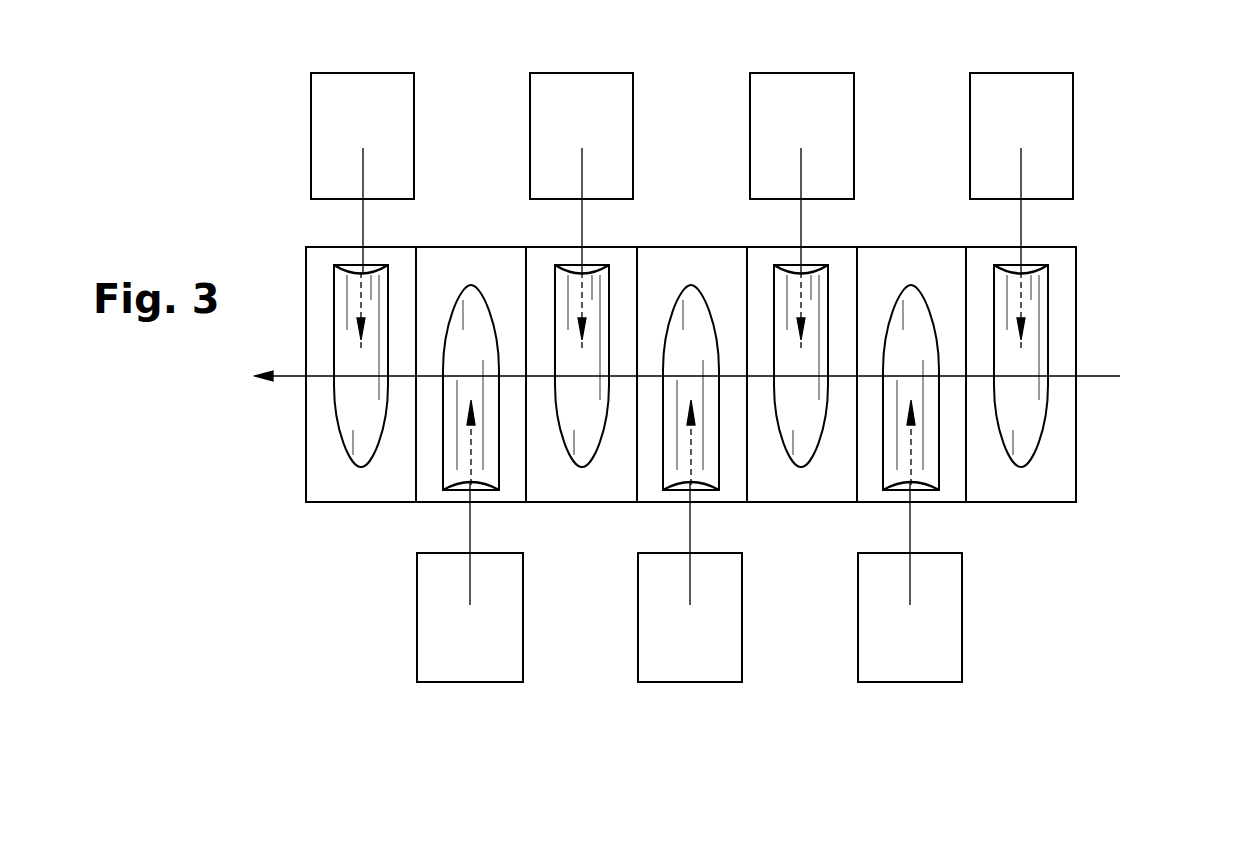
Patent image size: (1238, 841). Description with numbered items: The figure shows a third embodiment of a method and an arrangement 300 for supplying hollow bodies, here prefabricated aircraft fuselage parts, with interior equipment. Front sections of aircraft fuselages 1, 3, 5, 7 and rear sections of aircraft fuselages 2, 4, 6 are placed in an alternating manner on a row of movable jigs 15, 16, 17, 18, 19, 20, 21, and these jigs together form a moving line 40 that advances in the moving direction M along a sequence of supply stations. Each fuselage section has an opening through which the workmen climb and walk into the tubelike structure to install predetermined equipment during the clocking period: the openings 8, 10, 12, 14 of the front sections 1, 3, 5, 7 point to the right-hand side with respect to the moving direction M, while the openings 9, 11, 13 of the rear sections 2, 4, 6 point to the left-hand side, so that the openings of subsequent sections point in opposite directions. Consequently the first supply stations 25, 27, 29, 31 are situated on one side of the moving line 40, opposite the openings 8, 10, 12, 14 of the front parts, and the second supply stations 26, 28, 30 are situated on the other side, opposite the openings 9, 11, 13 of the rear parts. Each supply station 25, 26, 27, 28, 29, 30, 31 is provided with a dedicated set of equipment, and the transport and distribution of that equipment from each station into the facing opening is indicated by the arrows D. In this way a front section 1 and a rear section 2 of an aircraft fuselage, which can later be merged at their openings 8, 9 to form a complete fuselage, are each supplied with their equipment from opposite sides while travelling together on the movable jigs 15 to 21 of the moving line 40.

The arrangement 300 is at (228, 85).
The moving line 40 is at (1118, 464).
The front section of aircraft fuselage 1 is at (353, 420).
The rear section of aircraft fuselage 2 is at (463, 352).
The front section of aircraft fuselage 3 is at (574, 420).
The rear section of aircraft fuselage 4 is at (683, 352).
The front section of aircraft fuselage 5 is at (793, 420).
The rear section of aircraft fuselage 6 is at (903, 352).
The front section of aircraft fuselage 7 is at (1013, 420).
The opening 8 is at (353, 268).
The opening 9 is at (478, 492).
The opening 10 is at (574, 268).
The opening 11 is at (698, 492).
The opening 12 is at (793, 268).
The opening 13 is at (918, 492).
The opening 14 is at (1013, 268).
The movable jig 15 is at (360, 483).
The movable jig 16 is at (450, 267).
The movable jig 17 is at (581, 483).
The movable jig 18 is at (670, 267).
The movable jig 19 is at (801, 483).
The movable jig 20 is at (890, 267).
The movable jig 21 is at (1021, 483).
The first supply station 25 is at (362, 90).
The second supply station 26 is at (468, 662).
The first supply station 27 is at (581, 90).
The second supply station 28 is at (688, 662).
The first supply station 29 is at (800, 90).
The second supply station 30 is at (908, 662).
The first supply station 31 is at (1020, 90).
The moving direction M is at (295, 372).
The arrows indicating transport and distribution of equipment D is at (364, 224).